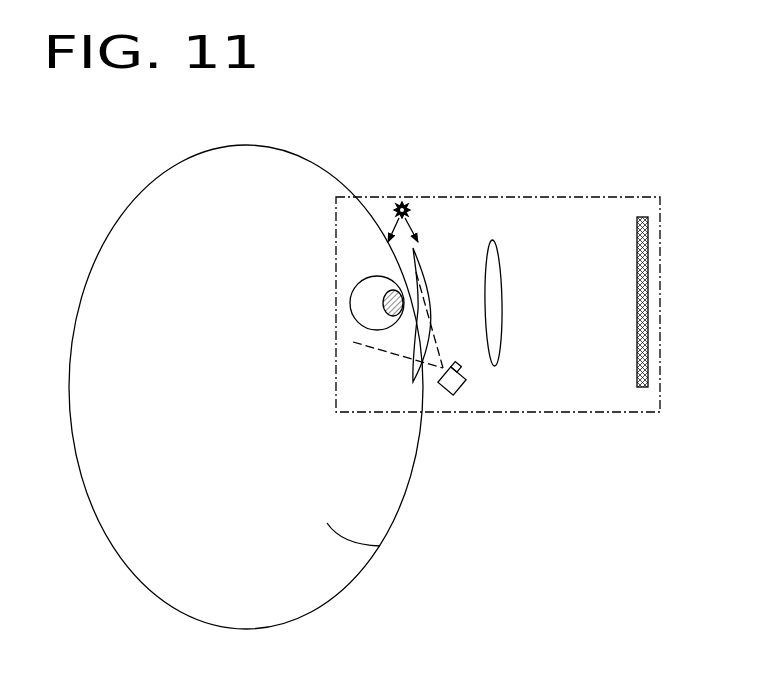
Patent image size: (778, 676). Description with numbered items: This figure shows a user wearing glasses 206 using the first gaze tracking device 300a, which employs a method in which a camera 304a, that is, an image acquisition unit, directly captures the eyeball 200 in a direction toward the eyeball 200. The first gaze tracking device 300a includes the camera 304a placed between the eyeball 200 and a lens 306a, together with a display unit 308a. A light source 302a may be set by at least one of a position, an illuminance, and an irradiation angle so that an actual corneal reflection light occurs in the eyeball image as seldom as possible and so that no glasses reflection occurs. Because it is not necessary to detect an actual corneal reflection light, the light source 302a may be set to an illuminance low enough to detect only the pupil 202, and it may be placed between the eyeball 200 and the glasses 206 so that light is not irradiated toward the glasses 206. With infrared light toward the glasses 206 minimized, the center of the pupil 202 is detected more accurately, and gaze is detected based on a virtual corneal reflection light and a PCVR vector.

The eyeball 200 is at (352, 318).
The pupil 202 is at (388, 298).
The glasses 206 is at (428, 268).
The first gaze tracking device 300a is at (538, 197).
The light source 302a is at (400, 202).
The camera 304a is at (455, 396).
The lens 306a is at (495, 240).
The display unit 308a is at (649, 246).